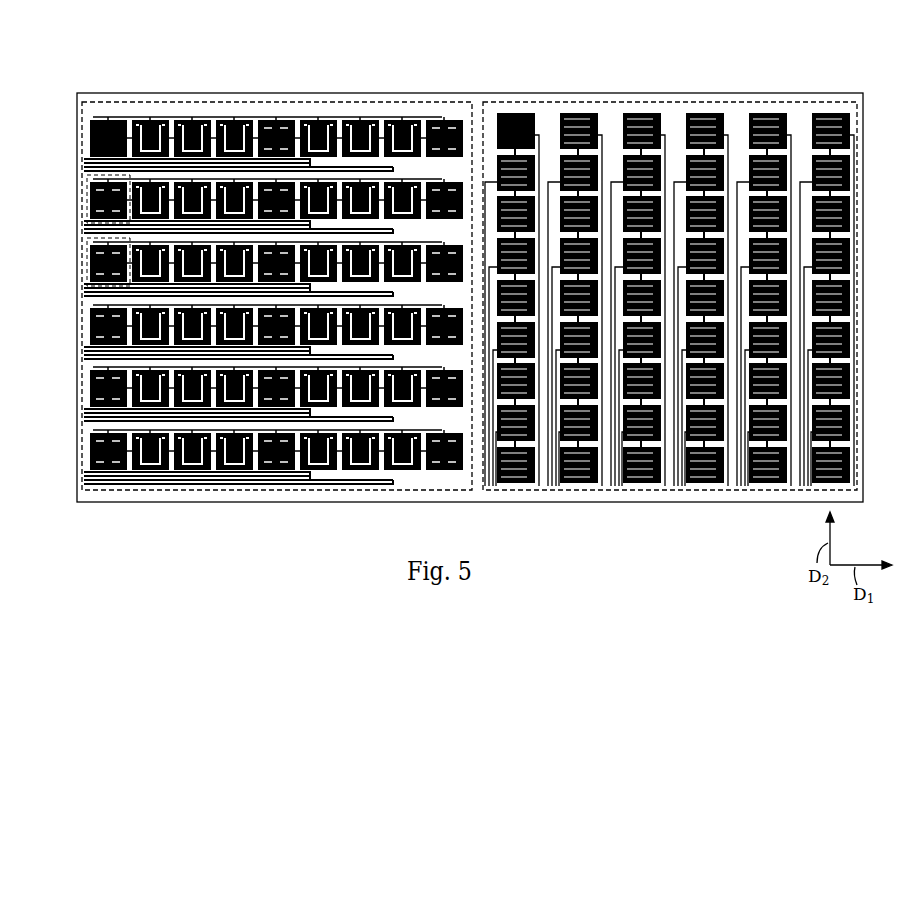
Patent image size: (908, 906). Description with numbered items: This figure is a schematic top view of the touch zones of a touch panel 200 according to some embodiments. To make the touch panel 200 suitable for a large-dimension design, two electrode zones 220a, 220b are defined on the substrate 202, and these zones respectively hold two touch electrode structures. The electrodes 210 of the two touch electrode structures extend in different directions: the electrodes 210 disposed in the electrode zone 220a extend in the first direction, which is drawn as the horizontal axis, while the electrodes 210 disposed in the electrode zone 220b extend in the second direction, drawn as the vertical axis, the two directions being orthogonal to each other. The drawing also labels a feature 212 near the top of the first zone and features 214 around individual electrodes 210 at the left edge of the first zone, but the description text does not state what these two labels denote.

The touch panel 200 is at (58, 56).
The substrate 202 is at (800, 93).
The electrodes 210 is at (90, 147).
The signal line 212 is at (105, 118).
The pixel group 214 is at (87, 197).
The electrode zone 220a is at (168, 101).
The electrode zone 220b is at (660, 101).